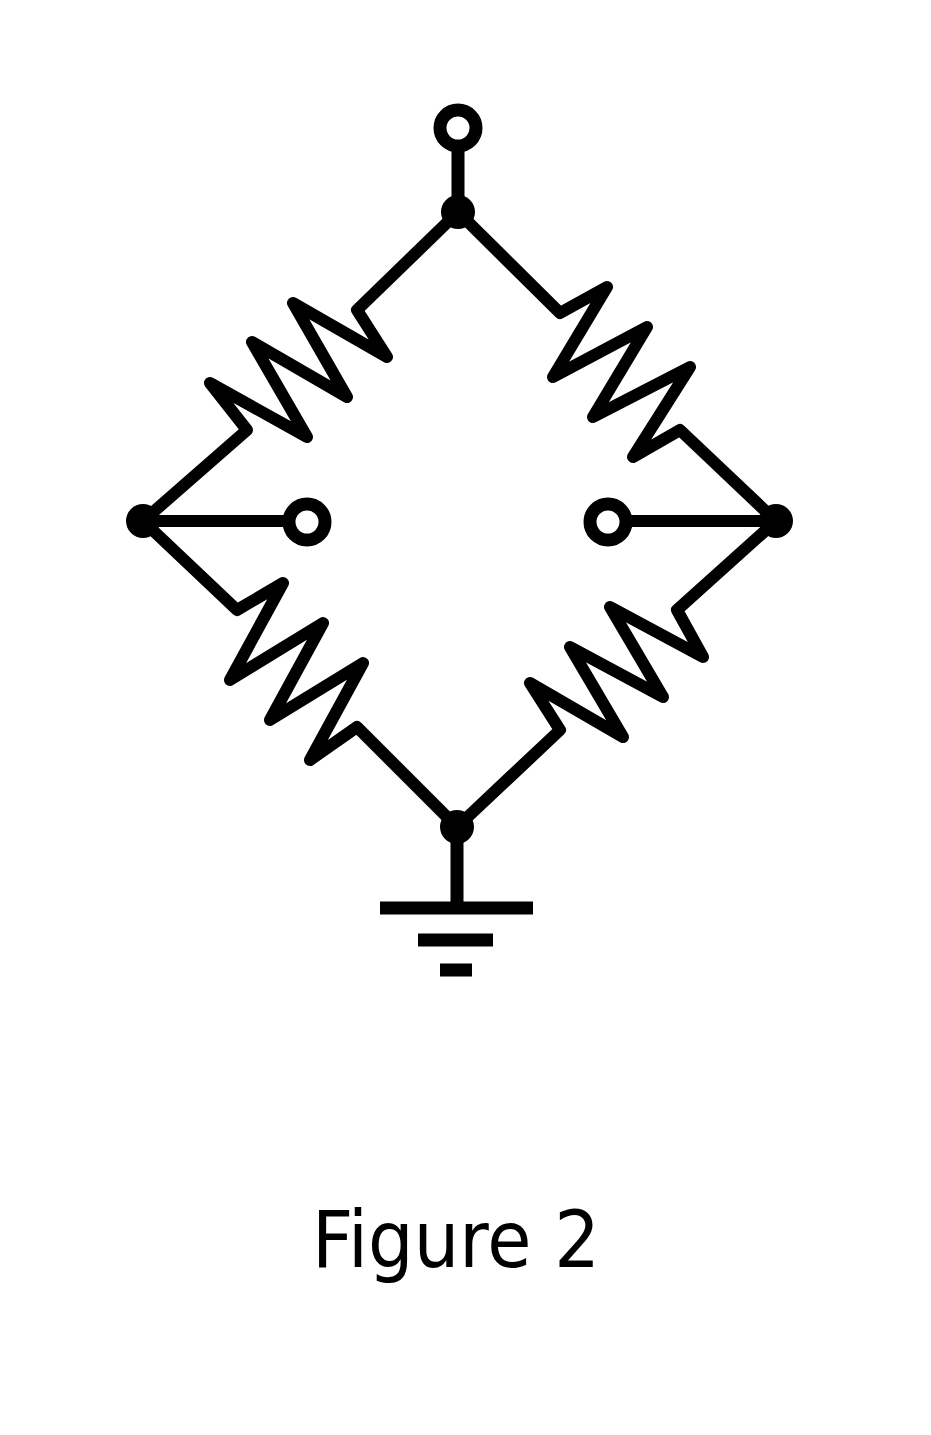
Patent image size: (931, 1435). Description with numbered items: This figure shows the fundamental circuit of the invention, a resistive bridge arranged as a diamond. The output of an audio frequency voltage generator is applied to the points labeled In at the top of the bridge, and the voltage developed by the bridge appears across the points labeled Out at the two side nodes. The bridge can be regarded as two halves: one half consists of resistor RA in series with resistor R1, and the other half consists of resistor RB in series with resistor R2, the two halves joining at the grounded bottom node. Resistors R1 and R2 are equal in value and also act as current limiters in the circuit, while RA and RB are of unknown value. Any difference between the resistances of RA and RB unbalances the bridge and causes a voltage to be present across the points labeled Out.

The resistor RA is at (300, 366).
The resistor RB is at (617, 366).
The resistor R1 is at (300, 674).
The resistor R2 is at (616, 674).
The input points In is at (455, 106).
The output points Out is at (459, 515).